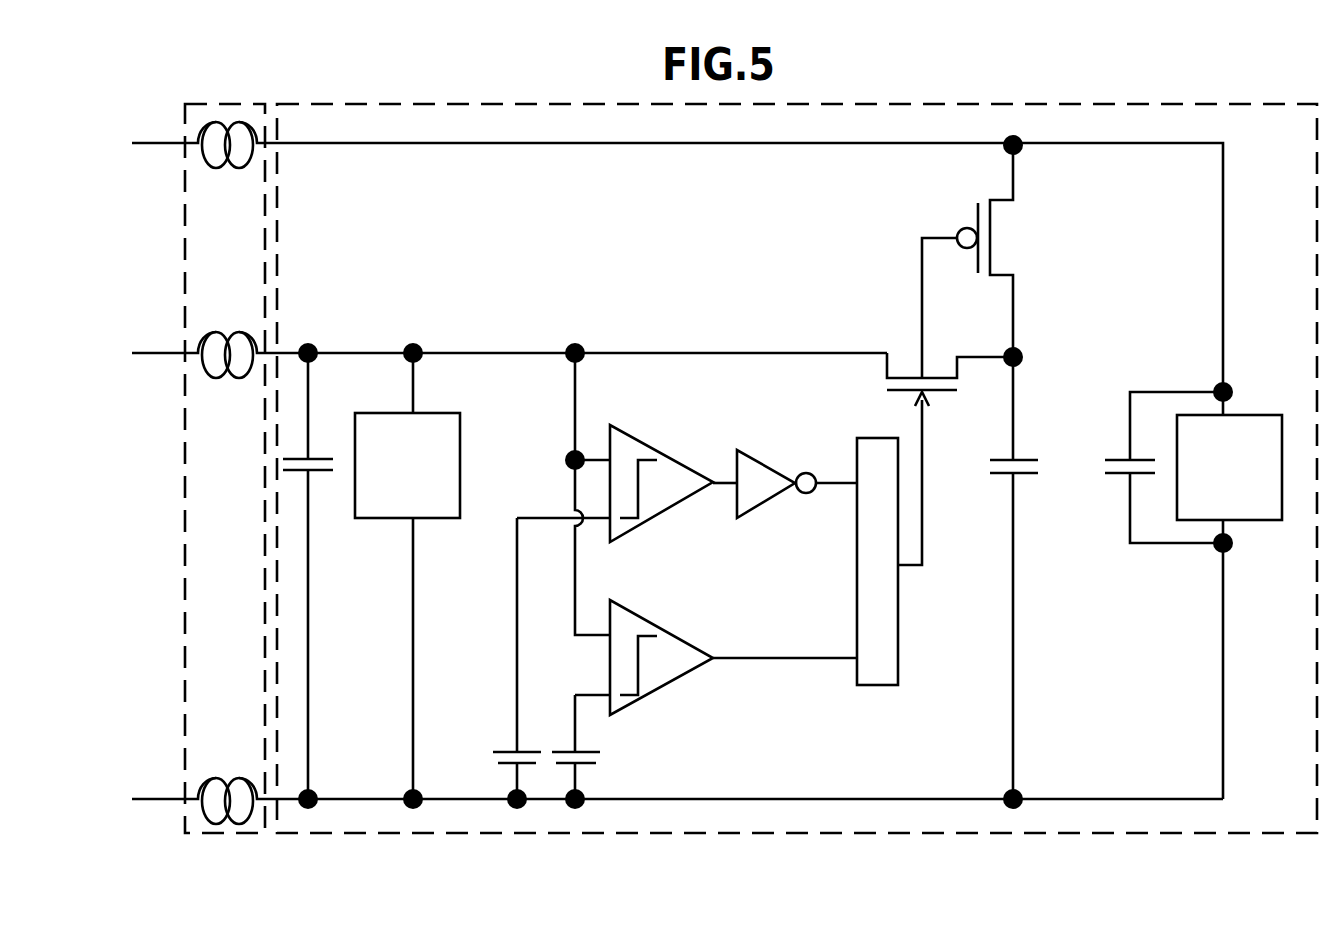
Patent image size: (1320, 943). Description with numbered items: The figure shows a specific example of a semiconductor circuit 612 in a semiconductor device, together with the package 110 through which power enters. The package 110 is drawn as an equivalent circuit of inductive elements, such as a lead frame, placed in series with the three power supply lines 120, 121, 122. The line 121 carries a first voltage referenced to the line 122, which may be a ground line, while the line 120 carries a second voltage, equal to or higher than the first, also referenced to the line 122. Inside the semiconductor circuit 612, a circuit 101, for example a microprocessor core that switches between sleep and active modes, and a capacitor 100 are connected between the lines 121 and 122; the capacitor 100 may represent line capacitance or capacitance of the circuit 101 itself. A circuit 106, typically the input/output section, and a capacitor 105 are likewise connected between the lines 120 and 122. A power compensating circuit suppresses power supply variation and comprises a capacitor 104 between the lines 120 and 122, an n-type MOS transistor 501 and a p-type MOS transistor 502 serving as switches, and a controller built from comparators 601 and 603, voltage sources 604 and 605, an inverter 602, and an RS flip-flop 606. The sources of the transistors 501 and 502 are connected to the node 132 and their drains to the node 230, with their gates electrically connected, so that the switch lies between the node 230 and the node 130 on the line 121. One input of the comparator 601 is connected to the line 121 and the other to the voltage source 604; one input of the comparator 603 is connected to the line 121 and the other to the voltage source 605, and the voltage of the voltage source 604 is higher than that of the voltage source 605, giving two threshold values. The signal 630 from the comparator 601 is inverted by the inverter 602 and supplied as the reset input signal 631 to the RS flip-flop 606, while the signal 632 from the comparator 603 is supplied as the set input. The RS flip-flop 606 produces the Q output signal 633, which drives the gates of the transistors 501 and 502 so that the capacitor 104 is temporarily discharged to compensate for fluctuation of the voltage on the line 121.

The line 120 is at (168, 142).
The line 121 is at (168, 352).
The line 122 is at (168, 799).
The package 110 is at (198, 833).
The semiconductor circuit 612 is at (715, 833).
The node 130 is at (413, 345).
The capacitor 100 is at (318, 473).
The circuit 101 is at (455, 423).
The comparator 601 is at (663, 445).
The signal 630 is at (727, 487).
The inverter 602 is at (793, 432).
The reset input signal 631 is at (838, 485).
The RS flip-flop 606 is at (857, 628).
The comparator 603 is at (667, 687).
The signal 632 is at (763, 660).
The Q output signal 633 is at (925, 565).
The voltage source 604 is at (505, 748).
The voltage source 605 is at (598, 750).
The n-type MOS transistor 501 is at (912, 377).
The p-type MOS transistor 502 is at (992, 212).
The node 230 is at (1030, 350).
The node 132 is at (1007, 153).
The capacitor 104 is at (1023, 475).
The capacitor 105 is at (1118, 458).
The circuit 106 is at (1192, 420).